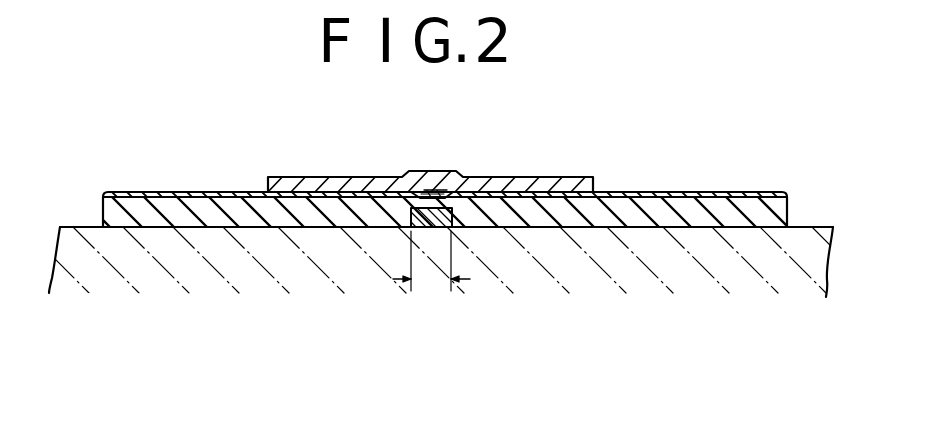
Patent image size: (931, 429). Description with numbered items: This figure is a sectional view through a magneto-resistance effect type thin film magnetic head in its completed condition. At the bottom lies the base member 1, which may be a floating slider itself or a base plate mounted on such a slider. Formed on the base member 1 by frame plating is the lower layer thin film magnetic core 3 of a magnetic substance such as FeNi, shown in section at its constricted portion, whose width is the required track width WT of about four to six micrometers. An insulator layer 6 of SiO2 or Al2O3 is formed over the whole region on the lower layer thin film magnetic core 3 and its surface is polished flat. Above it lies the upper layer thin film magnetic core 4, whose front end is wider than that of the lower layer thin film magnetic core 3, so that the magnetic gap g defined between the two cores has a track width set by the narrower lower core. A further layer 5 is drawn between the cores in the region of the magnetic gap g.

The base member 1 is at (809, 237).
The lower layer thin film magnetic core 3 is at (408, 222).
The upper layer thin film magnetic core 4 is at (359, 187).
The gap spacer layer 5 is at (437, 186).
The insulator layer 6 is at (743, 214).
The magnetic gap g is at (447, 184).
The track width WT is at (431, 263).